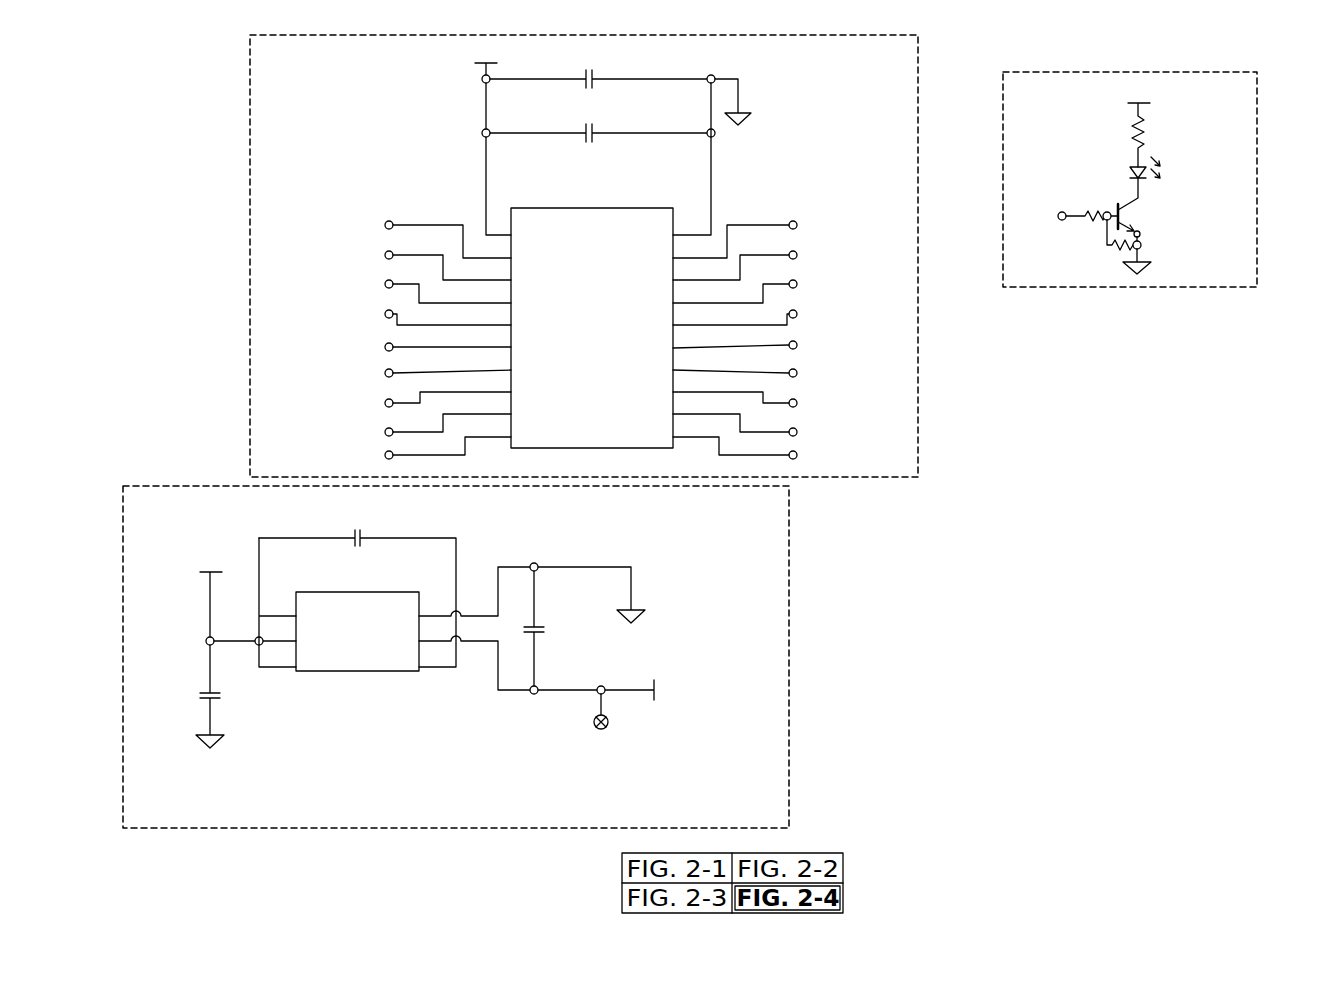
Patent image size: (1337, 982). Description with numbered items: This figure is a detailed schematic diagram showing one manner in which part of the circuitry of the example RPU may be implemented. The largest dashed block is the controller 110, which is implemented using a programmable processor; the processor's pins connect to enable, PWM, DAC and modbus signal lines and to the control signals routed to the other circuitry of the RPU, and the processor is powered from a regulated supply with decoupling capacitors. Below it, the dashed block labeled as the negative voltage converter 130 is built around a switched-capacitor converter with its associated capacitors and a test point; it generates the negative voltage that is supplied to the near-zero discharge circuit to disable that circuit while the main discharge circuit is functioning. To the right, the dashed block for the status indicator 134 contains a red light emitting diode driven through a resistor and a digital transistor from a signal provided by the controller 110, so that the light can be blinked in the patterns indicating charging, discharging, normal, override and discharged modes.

The controller 110 is at (918, 163).
The negative voltage converter 130 is at (789, 575).
The status indicator 134 is at (1257, 110).